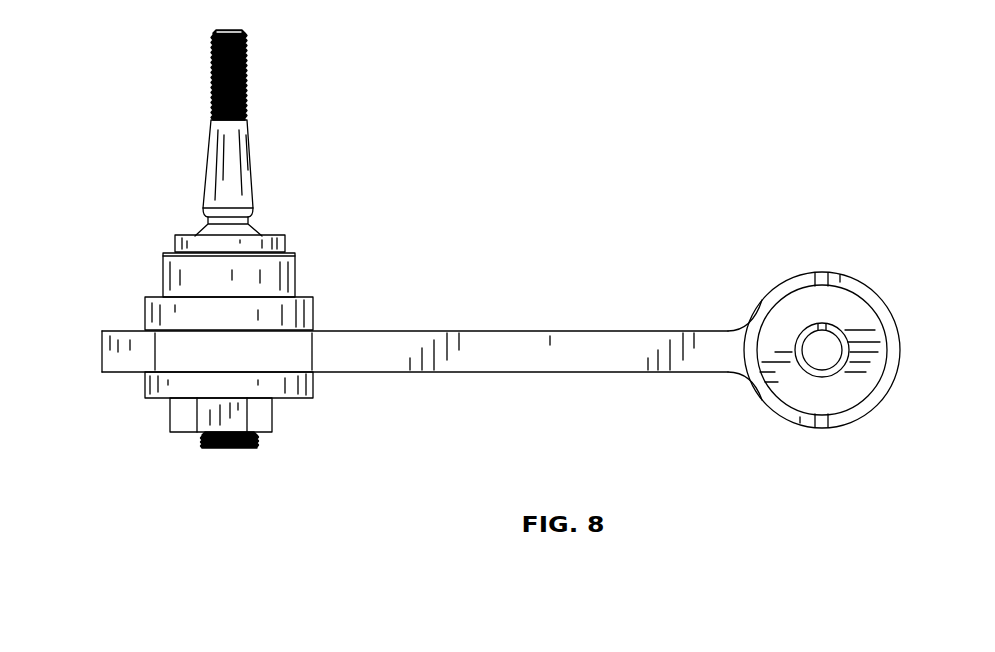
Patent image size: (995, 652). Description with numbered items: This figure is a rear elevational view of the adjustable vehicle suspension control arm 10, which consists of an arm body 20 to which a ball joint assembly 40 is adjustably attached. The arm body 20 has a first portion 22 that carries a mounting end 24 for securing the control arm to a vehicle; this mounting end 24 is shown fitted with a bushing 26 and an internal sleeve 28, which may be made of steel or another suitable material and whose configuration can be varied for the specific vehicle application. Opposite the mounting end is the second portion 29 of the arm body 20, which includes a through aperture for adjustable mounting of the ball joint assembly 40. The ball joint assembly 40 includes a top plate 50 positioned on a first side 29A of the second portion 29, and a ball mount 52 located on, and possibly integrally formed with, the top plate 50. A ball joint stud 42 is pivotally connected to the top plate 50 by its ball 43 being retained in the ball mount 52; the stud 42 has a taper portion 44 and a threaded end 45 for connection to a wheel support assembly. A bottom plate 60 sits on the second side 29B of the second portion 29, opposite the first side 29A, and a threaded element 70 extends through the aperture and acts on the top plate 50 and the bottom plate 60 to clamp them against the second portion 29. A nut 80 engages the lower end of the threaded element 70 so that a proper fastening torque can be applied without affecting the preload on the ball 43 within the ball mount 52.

The adjustable vehicle suspension control arm 10 is at (553, 240).
The arm body 20 is at (584, 374).
The first portion 22 is at (890, 394).
The mounting end 24 is at (818, 272).
The bushing 26 is at (783, 317).
The internal sleeve 28 is at (838, 327).
The second portion 29 is at (103, 353).
The first side 29A is at (396, 331).
The second side 29B is at (475, 372).
The ball joint assembly 40 is at (273, 237).
The ball joint stud 42 is at (247, 120).
The ball 43 is at (262, 232).
The taper portion 44 is at (207, 165).
The threaded end 45 is at (246, 55).
The top plate 50 is at (144, 308).
The ball mount 52 is at (162, 268).
The bottom plate 60 is at (155, 392).
The threaded element 70 is at (230, 448).
The nut 80 is at (180, 425).